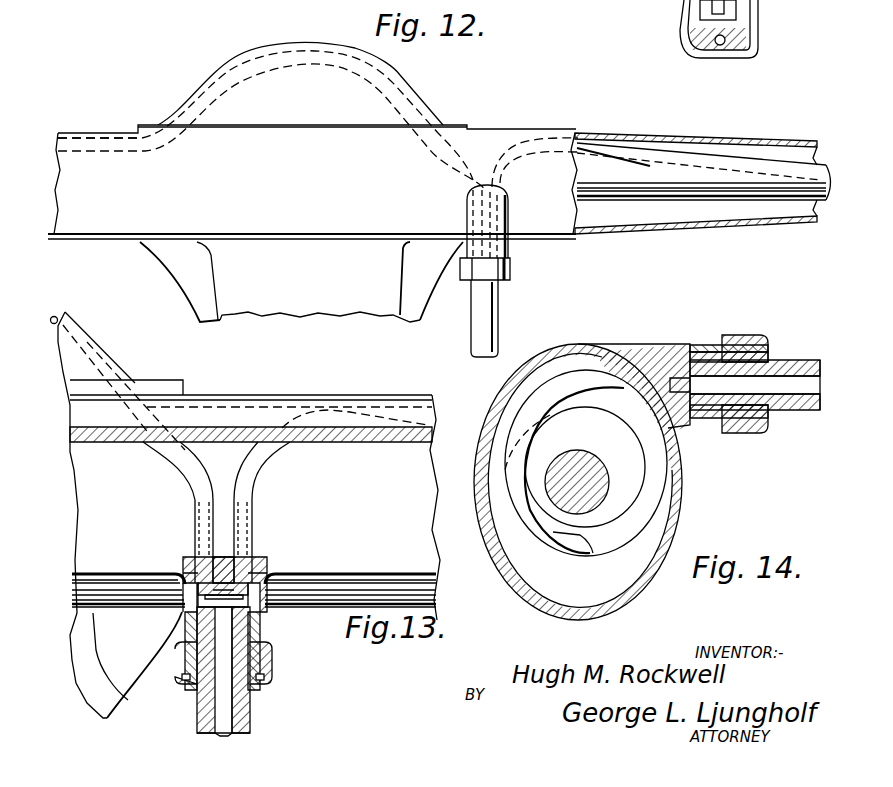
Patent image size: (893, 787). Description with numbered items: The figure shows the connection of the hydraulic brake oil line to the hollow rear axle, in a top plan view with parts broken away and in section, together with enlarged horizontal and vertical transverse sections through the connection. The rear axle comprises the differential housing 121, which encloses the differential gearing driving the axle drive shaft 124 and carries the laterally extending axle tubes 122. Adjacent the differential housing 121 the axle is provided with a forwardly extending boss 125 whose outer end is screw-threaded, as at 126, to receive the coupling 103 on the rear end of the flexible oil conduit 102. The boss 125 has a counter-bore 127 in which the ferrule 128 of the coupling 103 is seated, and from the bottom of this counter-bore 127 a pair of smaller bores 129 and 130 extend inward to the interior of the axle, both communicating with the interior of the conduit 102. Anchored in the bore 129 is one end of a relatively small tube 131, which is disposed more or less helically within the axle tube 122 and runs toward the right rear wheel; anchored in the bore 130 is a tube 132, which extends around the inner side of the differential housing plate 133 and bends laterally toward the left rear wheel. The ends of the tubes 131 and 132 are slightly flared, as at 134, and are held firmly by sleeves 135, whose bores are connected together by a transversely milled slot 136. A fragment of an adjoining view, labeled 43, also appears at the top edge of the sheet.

In FIG. 12, the fragment component 43 is at (738, 40).
In FIG. 12, the flexible tube 102 is at (496, 300).
In FIG. 13, the flexible tube 102 is at (250, 705).
In FIG. 14, the flexible tube 102 is at (792, 360).
In FIG. 12, the coupling 103 is at (512, 272).
In FIG. 13, the coupling 103 is at (272, 668).
In FIG. 14, the coupling 103 is at (755, 335).
In FIG. 12, the differential housing 121 is at (415, 140).
In FIG. 12, the axle tube 122 is at (650, 218).
In FIG. 14, the axle tube 122 is at (678, 493).
In FIG. 12, the axle drive shaft 124 is at (675, 226).
In FIG. 12, the boss 125 is at (505, 245).
In FIG. 13, the boss 125 is at (187, 623).
In FIG. 14, the boss 125 is at (682, 345).
In FIG. 13, the screw threads 126 is at (175, 652).
In FIG. 14, the screw threads 126 is at (712, 345).
In FIG. 13, the counter-bore 127 is at (177, 678).
In FIG. 14, the counter-bore 127 is at (716, 420).
In FIG. 13, the ferrule 128 is at (193, 690).
In FIG. 14, the ferrule 128 is at (752, 433).
In FIG. 13, the bore 129 is at (263, 562).
In FIG. 13, the bore 130 is at (196, 565).
In FIG. 12, the tube 131 is at (633, 155).
In FIG. 13, the tube 131 is at (256, 480).
In FIG. 14, the tube 131 is at (573, 533).
In FIG. 12, the tube 132 is at (400, 76).
In FIG. 13, the tube 132 is at (200, 484).
In FIG. 12, the differential housing plate 133 is at (388, 116).
In FIG. 13, the differential housing plate 133 is at (90, 344).
In FIG. 13, the flared end 134 is at (262, 575).
In FIG. 13, the sleeve 135 is at (222, 600).
In FIG. 13, the transversely milled slot 136 is at (252, 612).